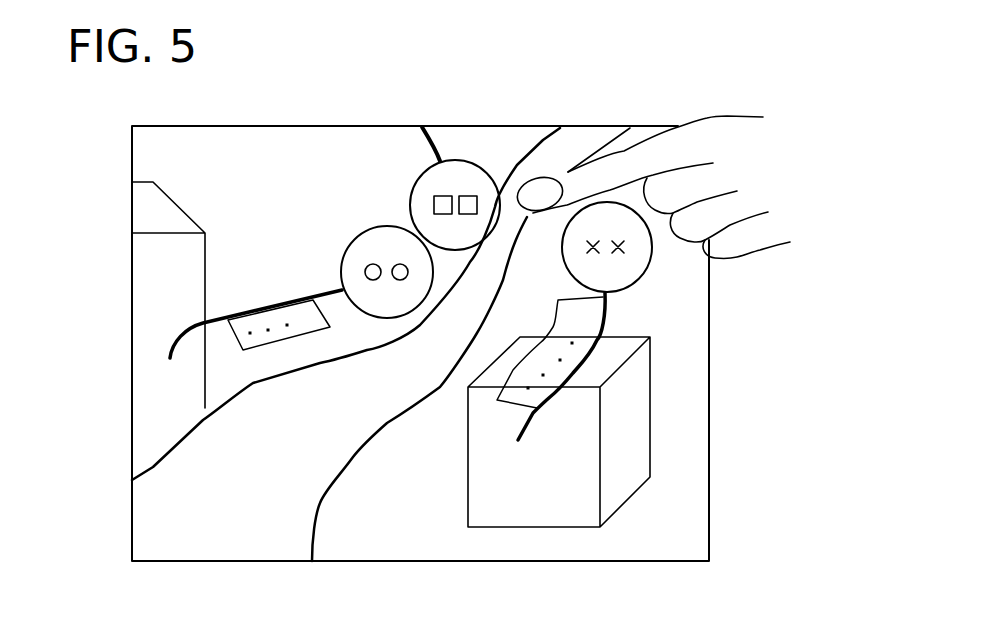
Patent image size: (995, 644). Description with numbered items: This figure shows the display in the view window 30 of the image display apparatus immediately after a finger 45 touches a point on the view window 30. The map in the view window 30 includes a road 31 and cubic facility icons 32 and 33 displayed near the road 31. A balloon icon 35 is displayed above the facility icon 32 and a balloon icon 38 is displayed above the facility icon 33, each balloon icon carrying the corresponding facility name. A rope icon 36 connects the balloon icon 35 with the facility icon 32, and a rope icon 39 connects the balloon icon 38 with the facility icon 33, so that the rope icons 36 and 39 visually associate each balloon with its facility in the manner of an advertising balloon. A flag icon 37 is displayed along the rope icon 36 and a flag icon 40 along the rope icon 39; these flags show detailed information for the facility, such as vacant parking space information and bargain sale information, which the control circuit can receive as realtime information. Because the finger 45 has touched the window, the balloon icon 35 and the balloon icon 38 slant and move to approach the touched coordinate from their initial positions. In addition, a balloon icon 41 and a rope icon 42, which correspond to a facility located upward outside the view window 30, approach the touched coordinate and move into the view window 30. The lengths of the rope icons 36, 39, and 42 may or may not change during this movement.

The view window 30 is at (320, 110).
The road 31 is at (520, 167).
The facility icon 32 is at (141, 283).
The facility icon 33 is at (640, 445).
The balloon icon 35 is at (367, 226).
The rope icon 36 is at (227, 318).
The flag icon 37 is at (257, 353).
The balloon icon 38 is at (653, 248).
The rope icon 39 is at (605, 322).
The flag icon 40 is at (540, 395).
The balloon icon 41 is at (416, 185).
The rope icon 42 is at (432, 145).
The finger 45 is at (648, 155).